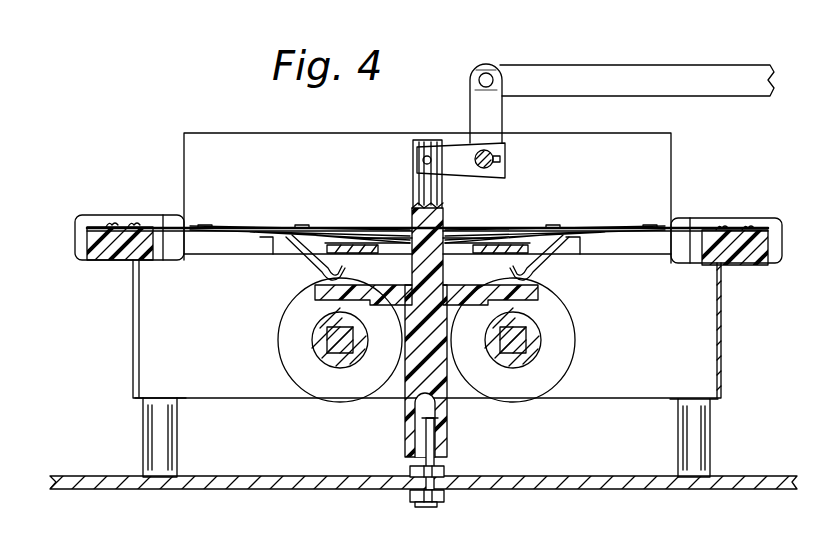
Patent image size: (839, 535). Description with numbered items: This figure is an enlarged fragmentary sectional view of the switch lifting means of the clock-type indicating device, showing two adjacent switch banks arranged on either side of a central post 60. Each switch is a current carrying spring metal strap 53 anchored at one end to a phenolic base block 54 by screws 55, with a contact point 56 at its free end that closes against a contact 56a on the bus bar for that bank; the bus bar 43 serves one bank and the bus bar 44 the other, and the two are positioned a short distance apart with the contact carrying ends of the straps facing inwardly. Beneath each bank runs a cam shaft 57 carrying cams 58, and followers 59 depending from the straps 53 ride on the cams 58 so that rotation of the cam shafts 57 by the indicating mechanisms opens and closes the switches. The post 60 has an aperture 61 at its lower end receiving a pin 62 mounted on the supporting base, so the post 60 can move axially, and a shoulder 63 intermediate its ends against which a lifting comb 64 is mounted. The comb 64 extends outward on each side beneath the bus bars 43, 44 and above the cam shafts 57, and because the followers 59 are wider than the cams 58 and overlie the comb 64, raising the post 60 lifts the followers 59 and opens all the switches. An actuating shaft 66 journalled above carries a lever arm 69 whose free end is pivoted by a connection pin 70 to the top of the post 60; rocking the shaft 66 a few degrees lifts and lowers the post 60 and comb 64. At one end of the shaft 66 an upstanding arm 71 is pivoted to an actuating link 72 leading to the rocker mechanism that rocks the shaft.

The bus bar 43 is at (338, 246).
The bus bar 44 is at (518, 244).
The spring metal strap 53 is at (250, 230).
The phenolic base block 54 is at (133, 246).
The screw 55 is at (130, 224).
The contact point 56 is at (365, 240).
The contact 56a is at (378, 248).
The cam shaft 57 is at (345, 340).
The cam 58 is at (293, 372).
The follower 59 is at (300, 270).
The post 60 is at (418, 151).
The aperture 61 is at (437, 425).
The pin 62 is at (425, 432).
The shoulder 63 is at (462, 295).
The lifting comb 64 is at (396, 290).
The actuating shaft 66 is at (505, 158).
The lever arm 69 is at (461, 160).
The connection pin 70 is at (424, 162).
The upstanding arm 71 is at (478, 102).
The actuating link 72 is at (662, 88).